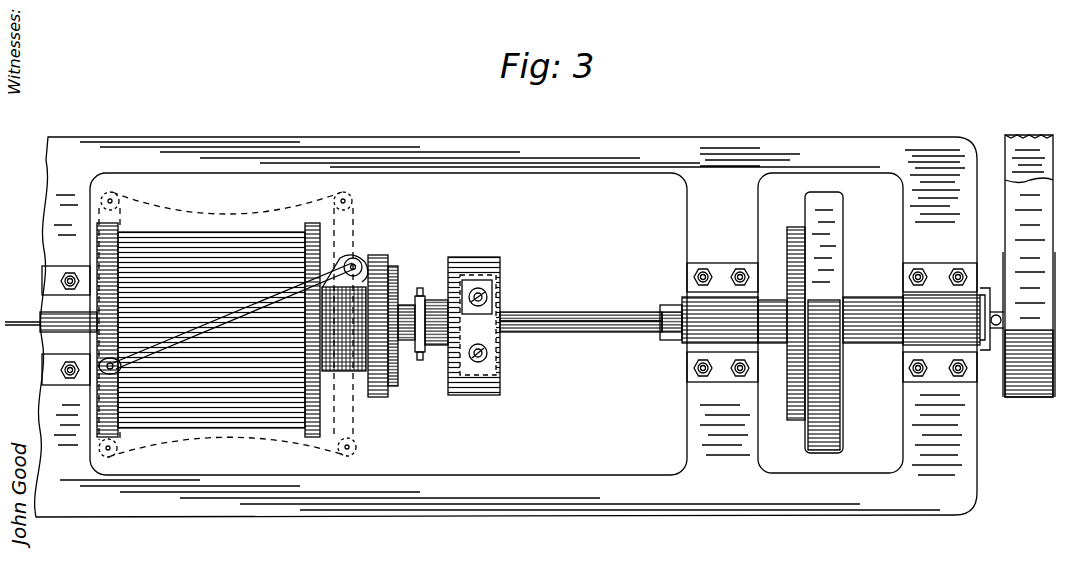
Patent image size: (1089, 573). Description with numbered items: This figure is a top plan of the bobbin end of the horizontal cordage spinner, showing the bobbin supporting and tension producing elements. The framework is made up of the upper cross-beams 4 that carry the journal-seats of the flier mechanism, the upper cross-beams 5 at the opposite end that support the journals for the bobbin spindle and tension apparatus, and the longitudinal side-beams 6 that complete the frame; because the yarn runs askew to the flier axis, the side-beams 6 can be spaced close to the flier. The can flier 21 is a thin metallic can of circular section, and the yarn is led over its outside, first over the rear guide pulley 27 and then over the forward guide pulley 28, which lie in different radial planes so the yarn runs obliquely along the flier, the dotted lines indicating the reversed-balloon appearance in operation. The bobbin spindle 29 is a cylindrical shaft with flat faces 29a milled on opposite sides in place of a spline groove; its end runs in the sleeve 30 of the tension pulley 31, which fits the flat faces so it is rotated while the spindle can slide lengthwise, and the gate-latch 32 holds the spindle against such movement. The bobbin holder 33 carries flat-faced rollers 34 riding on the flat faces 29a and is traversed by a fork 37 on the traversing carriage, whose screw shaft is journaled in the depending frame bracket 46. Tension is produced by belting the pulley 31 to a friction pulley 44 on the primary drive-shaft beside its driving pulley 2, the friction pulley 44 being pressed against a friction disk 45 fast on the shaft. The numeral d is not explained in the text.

The driving pulley 2 is at (1050, 398).
The upper cross-beams 4 is at (66, 296).
The upper cross-beams 5 is at (832, 323).
The longitudinal beams 6 is at (506, 327).
The shaft end d is at (95, 262).
The can flier 21 is at (165, 252).
The rear guide pulley 27 is at (100, 372).
The forward guide pulley 28 is at (360, 262).
The bobbin spindle 29 is at (592, 332).
The flat faces 29a is at (566, 312).
The sleeve 30 is at (779, 343).
The tension pulley 31 is at (843, 287).
The gate-latch 32 is at (985, 345).
The bobbin holder 33 is at (477, 258).
The flat-faced rollers 34 is at (500, 292).
The fork 37 is at (422, 300).
The friction pulley 44 is at (843, 432).
The friction disk 45 is at (796, 420).
The depending frame bracket 46 is at (668, 345).